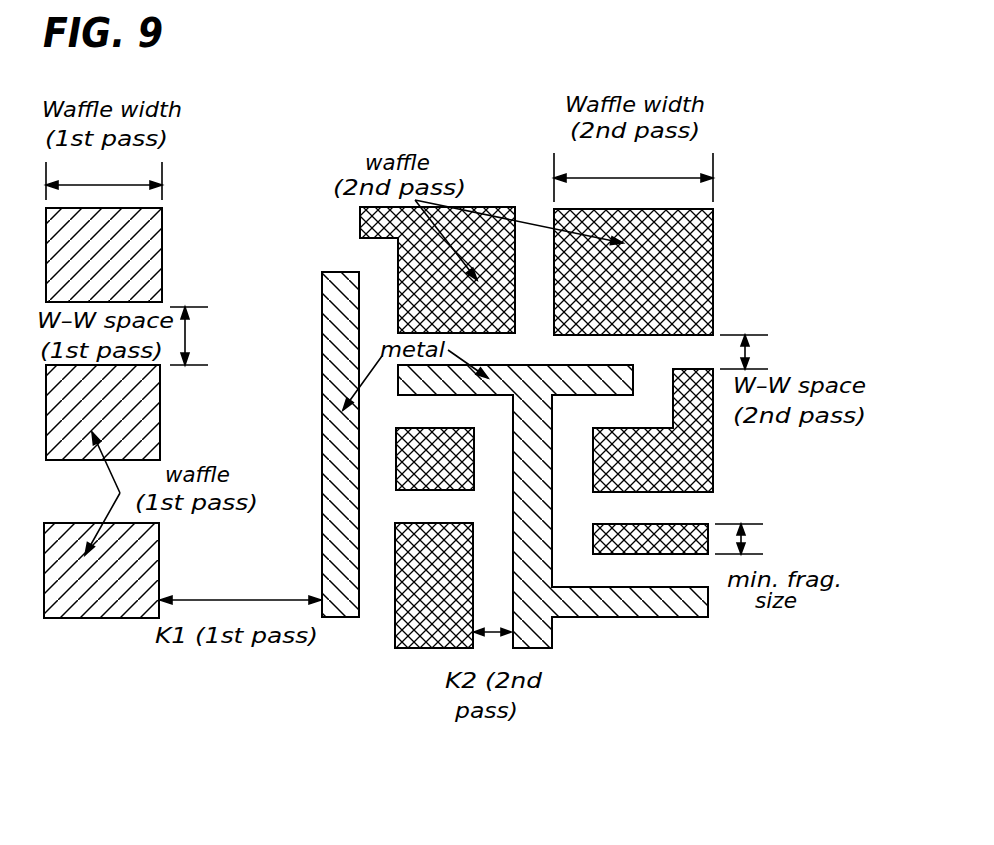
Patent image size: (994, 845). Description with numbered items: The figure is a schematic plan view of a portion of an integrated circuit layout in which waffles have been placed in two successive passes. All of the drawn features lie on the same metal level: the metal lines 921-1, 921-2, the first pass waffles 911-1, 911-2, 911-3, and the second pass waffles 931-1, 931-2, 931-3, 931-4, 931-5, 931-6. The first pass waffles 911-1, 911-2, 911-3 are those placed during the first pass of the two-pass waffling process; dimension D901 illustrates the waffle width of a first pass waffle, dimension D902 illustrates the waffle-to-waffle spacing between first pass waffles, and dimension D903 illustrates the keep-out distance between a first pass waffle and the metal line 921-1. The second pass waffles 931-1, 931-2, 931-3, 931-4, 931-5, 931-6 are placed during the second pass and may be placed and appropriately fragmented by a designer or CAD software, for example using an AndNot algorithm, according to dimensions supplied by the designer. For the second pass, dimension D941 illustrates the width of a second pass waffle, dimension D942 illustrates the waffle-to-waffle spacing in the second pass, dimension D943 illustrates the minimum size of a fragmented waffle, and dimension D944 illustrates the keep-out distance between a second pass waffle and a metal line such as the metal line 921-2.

The first pass waffle 911-1 is at (143, 247).
The first pass waffle 911-2 is at (143, 437).
The first pass waffle 911-3 is at (117, 612).
The metal line 921-1 is at (345, 283).
The metal line 921-2 is at (615, 612).
The second pass waffle 931-1 is at (502, 208).
The second pass waffle 931-2 is at (697, 245).
The second pass waffle 931-3 is at (713, 463).
The second pass waffle 931-4 is at (675, 525).
The second pass waffle 931-5 is at (418, 650).
The second pass waffle 931-6 is at (432, 448).
The waffle width dimension D901 is at (130, 186).
The waffle to waffle spacing dimension D902 is at (186, 336).
The keep out distance dimension D903 is at (262, 600).
The second pass waffle width dimension D941 is at (688, 178).
The second pass waffle to waffle spacing dimension D942 is at (746, 345).
The minimum fragmented waffle size dimension D943 is at (750, 540).
The second pass keep out distance dimension D944 is at (493, 634).